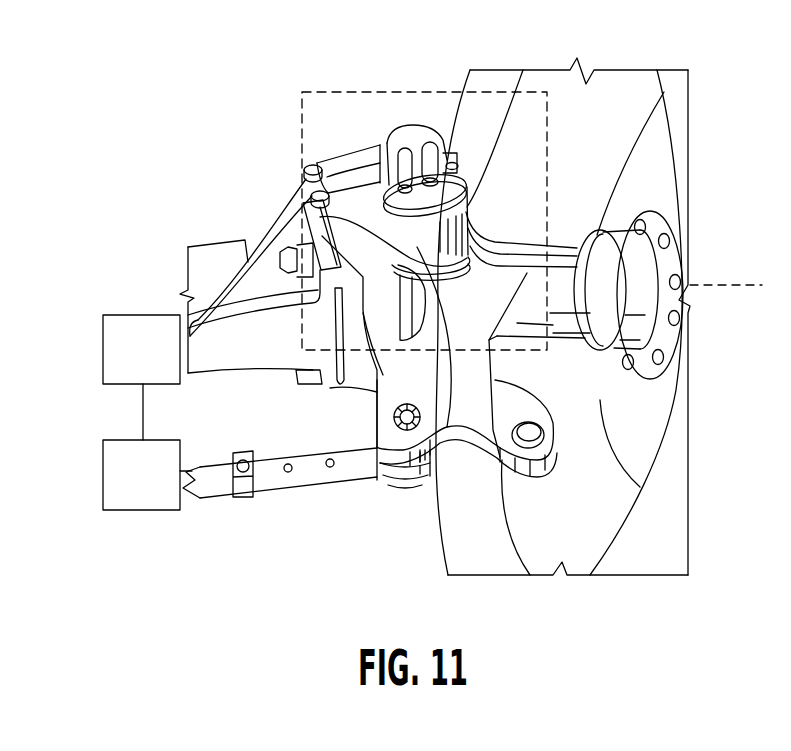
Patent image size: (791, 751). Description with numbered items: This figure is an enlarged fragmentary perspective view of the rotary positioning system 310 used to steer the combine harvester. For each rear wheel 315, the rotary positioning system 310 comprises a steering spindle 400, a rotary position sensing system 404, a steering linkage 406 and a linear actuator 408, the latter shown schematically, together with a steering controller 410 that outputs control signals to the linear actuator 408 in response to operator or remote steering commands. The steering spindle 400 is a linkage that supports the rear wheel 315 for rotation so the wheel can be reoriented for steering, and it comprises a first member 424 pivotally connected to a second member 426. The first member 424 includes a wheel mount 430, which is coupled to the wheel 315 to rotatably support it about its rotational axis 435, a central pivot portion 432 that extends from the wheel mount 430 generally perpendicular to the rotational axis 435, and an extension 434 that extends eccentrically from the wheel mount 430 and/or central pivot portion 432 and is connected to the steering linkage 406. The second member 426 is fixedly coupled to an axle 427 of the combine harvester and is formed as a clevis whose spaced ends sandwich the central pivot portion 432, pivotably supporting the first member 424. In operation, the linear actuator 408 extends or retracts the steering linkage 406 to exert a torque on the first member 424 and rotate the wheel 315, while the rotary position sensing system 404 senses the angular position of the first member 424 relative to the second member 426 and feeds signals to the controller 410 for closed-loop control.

The rotary positioning system 310 is at (160, 172).
The rear wheel 315 is at (593, 83).
The steering spindle 400 is at (480, 206).
The rotary position sensing system 404 is at (405, 133).
The steering linkage 406 is at (328, 477).
The linear actuator 408 is at (143, 512).
The steering controller 410 is at (103, 345).
The first member 424 is at (495, 460).
The second member 426 is at (347, 390).
The axle 427 is at (238, 240).
The wheel mount 430 is at (568, 275).
The central pivot portion 432 is at (448, 445).
The extension 434 is at (537, 478).
The rotational axis 435 is at (743, 285).